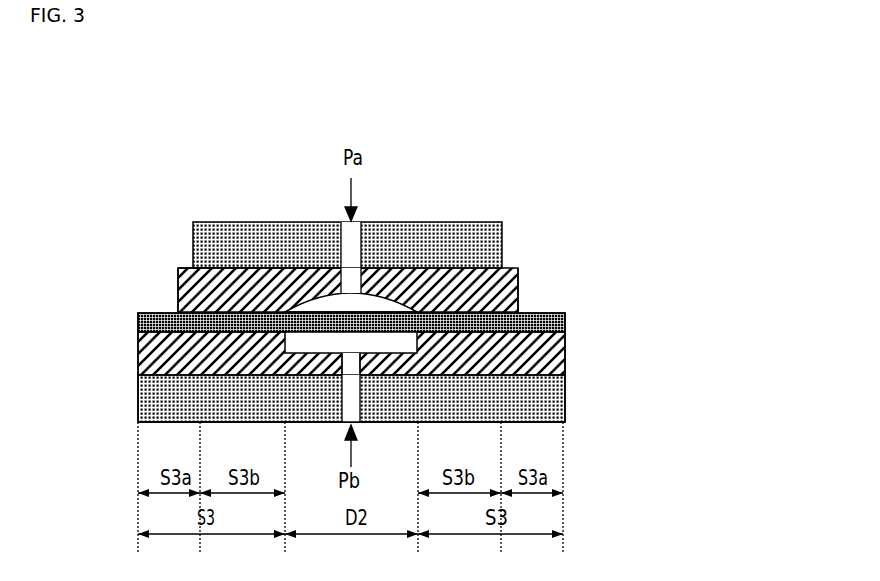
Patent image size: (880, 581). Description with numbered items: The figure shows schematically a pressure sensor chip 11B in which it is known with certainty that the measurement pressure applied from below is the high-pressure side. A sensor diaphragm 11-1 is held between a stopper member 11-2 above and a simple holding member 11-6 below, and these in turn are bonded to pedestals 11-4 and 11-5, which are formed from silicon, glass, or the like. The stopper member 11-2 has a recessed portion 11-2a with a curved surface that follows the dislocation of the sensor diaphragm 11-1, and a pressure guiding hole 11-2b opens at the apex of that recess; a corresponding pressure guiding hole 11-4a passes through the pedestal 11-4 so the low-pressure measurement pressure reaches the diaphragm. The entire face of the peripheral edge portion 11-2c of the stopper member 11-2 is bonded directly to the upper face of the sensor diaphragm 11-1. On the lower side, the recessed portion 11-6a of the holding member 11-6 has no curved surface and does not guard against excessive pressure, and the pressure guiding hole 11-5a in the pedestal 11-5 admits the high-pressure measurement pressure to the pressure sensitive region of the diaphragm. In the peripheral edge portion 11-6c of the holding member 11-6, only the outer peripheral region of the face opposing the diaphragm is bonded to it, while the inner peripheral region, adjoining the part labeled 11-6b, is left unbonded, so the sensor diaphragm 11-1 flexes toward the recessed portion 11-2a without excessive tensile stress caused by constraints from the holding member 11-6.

The pressure sensor chip 11B is at (500, 193).
The sensor diaphragm 11-1 is at (565, 320).
The stopper member 11-2 is at (518, 281).
The recessed portion 11-2a is at (364, 282).
The pressure guiding hole 11-2b is at (304, 268).
The peripheral edge portion 11-2c is at (178, 288).
The pedestal 11-4 is at (502, 224).
The pressure guiding hole 11-4a is at (338, 250).
The pedestal 11-5 is at (138, 423).
The pressure guiding hole 11-5a is at (338, 424).
The holding member 11-6 is at (565, 362).
The recessed portion 11-6a is at (375, 422).
The intermediate region of spacer 11-6b is at (325, 378).
The peripheral edge portion 11-6c is at (202, 380).